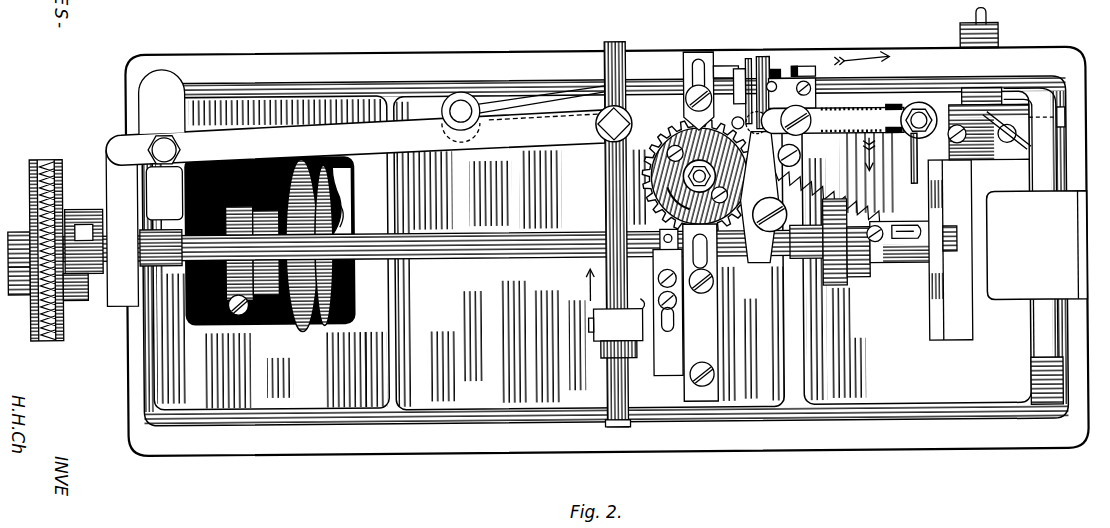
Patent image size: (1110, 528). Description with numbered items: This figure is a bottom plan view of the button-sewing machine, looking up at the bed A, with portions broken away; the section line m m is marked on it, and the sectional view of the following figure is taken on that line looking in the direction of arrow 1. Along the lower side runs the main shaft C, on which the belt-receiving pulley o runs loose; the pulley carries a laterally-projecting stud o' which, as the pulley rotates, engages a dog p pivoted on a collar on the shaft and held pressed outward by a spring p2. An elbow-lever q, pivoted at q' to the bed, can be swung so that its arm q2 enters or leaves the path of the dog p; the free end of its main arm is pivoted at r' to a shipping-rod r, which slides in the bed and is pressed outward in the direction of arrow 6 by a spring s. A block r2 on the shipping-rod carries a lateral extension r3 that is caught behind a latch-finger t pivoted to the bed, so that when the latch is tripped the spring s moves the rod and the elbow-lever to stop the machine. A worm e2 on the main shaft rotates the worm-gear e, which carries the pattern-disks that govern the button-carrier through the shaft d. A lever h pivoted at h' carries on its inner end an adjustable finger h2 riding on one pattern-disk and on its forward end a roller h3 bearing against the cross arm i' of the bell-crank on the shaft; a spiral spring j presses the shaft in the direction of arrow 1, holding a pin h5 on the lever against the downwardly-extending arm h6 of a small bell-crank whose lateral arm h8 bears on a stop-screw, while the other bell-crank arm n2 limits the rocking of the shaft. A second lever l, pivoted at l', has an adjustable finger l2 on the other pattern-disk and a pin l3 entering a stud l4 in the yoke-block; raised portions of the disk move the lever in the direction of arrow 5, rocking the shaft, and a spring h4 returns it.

The section line m m is at (690, 41).
The bed A is at (592, 251).
The main shaft C is at (577, 234).
The belt-receiving pulley o is at (35, 250).
The laterally-projecting stud o' is at (79, 299).
The dog p is at (84, 241).
The spring p2 is at (86, 216).
The elbow-lever q is at (355, 137).
The pivot of elbow-lever q' is at (161, 117).
The arm of elbow-lever q2 is at (140, 228).
The spring s is at (548, 101).
The shipping-rod r is at (605, 234).
The pivot of shipping-rod r' is at (626, 122).
The block r2 is at (616, 333).
The lateral extension r3 is at (637, 295).
The worm-gear e is at (661, 155).
The worm e2 is at (657, 234).
The adjustable finger l2 is at (706, 54).
The arm of bell-crank lever n2 is at (748, 64).
The cross arm i' is at (753, 74).
The pin h5 is at (768, 66).
The downwardly-extending arm h6 is at (779, 72).
The laterally-extending arm h8 is at (809, 68).
The bowl or roller h3 is at (791, 93).
The arrow 1 is at (861, 50).
The lever h is at (759, 186).
The pivot of lever h h' is at (780, 209).
The lever l is at (832, 119).
The spiral spring j is at (868, 112).
The stud l4 is at (911, 110).
The pin l3 is at (909, 140).
The pivot of lever l l' is at (794, 150).
The arrow 5 is at (874, 154).
The spring h4 is at (831, 189).
The shaft d is at (1060, 118).
The adjustable finger h2 is at (703, 298).
The latch-finger t is at (668, 312).
The arrow 6 is at (595, 285).